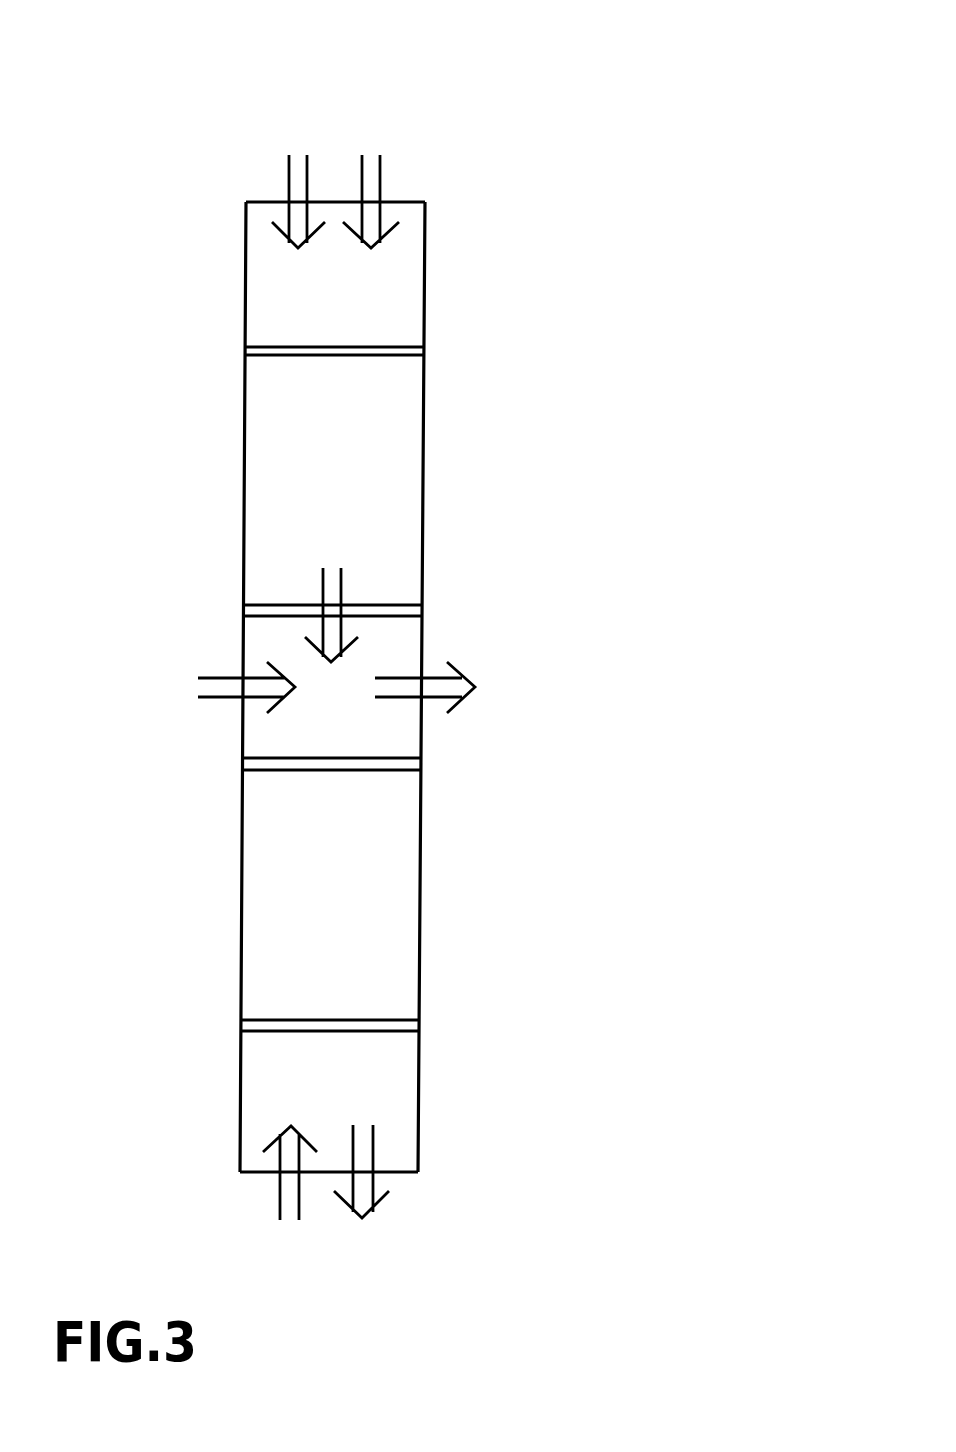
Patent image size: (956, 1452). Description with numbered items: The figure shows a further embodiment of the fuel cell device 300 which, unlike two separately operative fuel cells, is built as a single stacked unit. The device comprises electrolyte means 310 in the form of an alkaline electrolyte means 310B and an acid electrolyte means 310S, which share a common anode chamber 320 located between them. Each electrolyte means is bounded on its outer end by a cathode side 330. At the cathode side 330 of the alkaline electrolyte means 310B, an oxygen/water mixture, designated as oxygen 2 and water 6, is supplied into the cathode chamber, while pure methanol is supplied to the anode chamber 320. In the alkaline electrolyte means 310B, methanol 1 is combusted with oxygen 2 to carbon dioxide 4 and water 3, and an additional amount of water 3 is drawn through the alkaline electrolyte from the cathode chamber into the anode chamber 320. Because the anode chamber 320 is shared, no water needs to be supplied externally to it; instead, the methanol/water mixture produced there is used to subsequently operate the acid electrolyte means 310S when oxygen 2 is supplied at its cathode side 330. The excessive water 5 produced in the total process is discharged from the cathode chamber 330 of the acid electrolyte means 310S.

The fuel cell device 300 is at (487, 98).
The cathode side 330 is at (435, 282).
The electrolyte means 310 is at (401, 687).
The alkaline electrolyte means 310B is at (373, 495).
The acid electrolyte means 310S is at (367, 907).
The common anode chamber 320 is at (430, 736).
The methanol 1 is at (229, 687).
The oxygen 2 is at (294, 689).
The water 3 is at (331, 591).
The carbon dioxide 4 is at (442, 687).
The excessive water 5 is at (361, 1198).
The water 6 is at (371, 177).